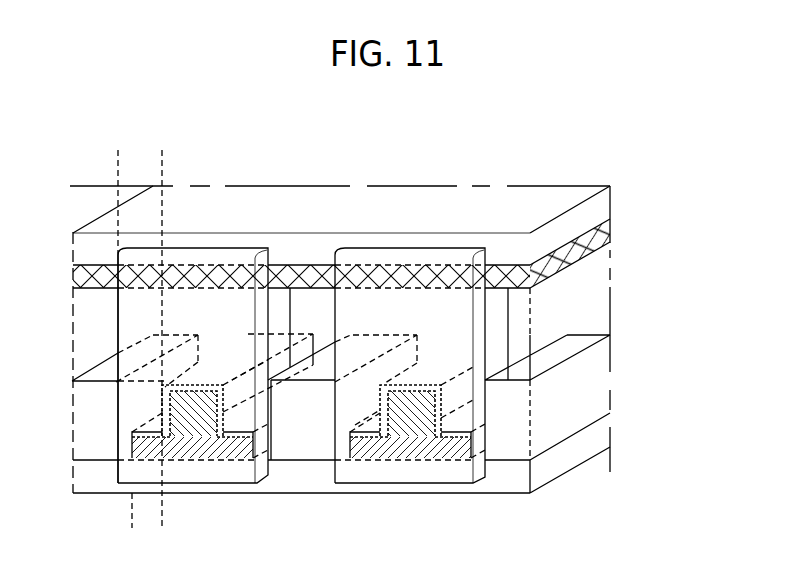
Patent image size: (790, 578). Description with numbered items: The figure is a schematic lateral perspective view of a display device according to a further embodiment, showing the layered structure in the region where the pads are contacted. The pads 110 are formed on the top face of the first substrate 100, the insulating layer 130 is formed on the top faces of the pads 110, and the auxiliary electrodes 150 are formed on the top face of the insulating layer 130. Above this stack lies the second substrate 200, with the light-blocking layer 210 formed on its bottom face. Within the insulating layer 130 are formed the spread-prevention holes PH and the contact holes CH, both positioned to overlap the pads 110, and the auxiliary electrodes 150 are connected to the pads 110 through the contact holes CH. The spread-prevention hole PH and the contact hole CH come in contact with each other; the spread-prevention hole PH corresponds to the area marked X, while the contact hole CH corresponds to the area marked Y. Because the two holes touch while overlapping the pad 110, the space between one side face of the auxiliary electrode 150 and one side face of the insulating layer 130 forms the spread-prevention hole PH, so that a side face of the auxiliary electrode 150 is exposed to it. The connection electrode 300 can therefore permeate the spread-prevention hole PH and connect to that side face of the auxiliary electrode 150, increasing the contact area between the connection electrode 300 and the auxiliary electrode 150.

The first substrate 100 is at (595, 445).
The pads 110 is at (367, 456).
The insulating layer 130 is at (595, 365).
The auxiliary electrodes 150 is at (437, 447).
The second substrate 200 is at (595, 210).
The light-blocking layer 210 is at (595, 238).
The connection electrode 300 is at (132, 312).
The contact hole CH is at (238, 443).
The spread-prevention hole PH is at (468, 410).
The area corresponding to the spread-prevention hole X is at (162, 164).
The area corresponding to the contact hole Y is at (162, 524).